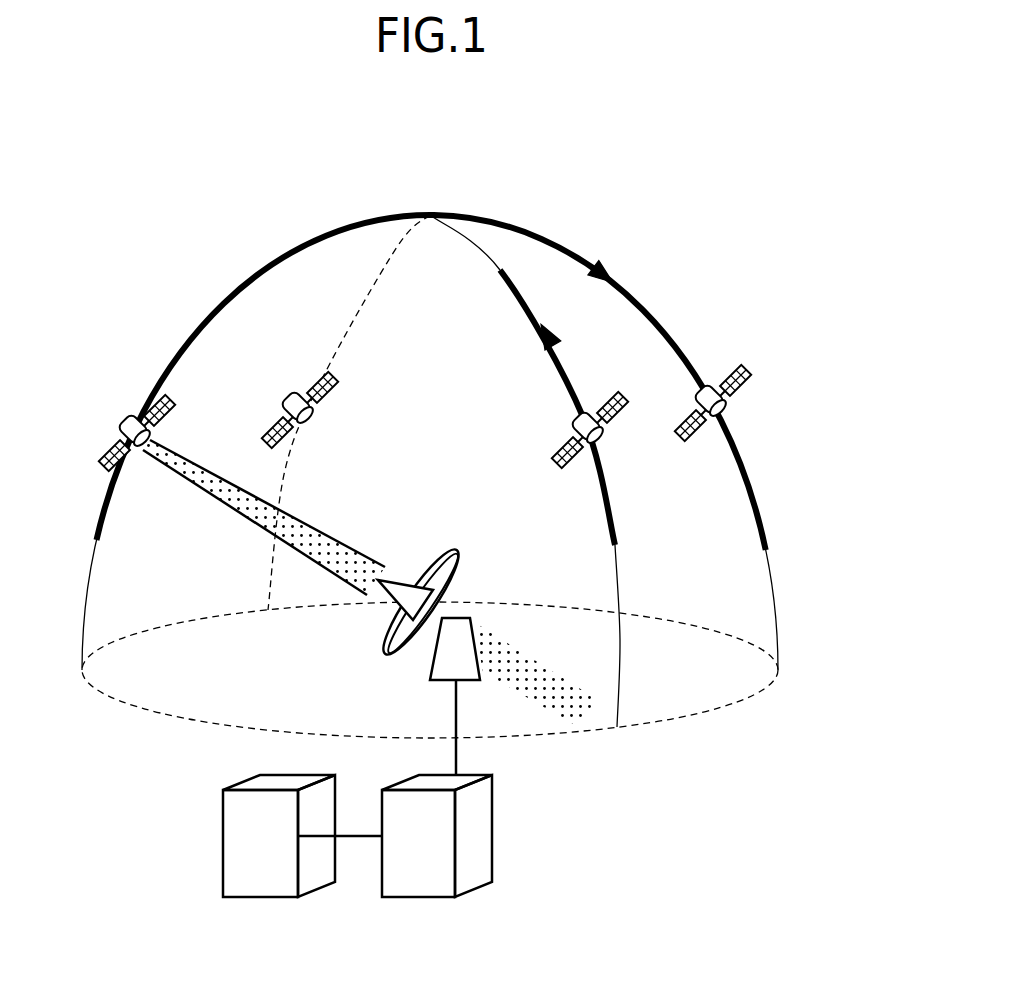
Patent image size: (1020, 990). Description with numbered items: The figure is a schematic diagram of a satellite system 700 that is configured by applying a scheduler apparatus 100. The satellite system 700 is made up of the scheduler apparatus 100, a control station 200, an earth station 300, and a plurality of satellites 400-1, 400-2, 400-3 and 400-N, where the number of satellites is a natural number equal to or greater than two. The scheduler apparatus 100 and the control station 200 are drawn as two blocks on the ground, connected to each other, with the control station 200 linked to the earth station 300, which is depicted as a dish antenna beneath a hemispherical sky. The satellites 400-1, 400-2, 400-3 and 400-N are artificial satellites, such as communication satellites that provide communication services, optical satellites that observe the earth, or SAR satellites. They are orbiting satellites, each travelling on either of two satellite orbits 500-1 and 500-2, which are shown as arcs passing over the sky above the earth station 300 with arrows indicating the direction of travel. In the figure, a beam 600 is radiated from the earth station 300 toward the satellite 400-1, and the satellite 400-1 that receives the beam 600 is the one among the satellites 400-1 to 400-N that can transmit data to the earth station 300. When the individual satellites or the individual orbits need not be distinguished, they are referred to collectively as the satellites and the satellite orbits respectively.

The scheduler apparatus 100 is at (223, 836).
The control station 200 is at (492, 836).
The earth station 300 is at (442, 548).
The satellite 400-1 is at (133, 417).
The satellite 400-2 is at (298, 397).
The satellite 400-3 is at (600, 393).
The satellite 400-N is at (725, 368).
The satellite orbit 500-1 is at (478, 218).
The satellite orbit 500-2 is at (617, 505).
The beam 600 is at (193, 453).
The satellite system 700 is at (640, 154).